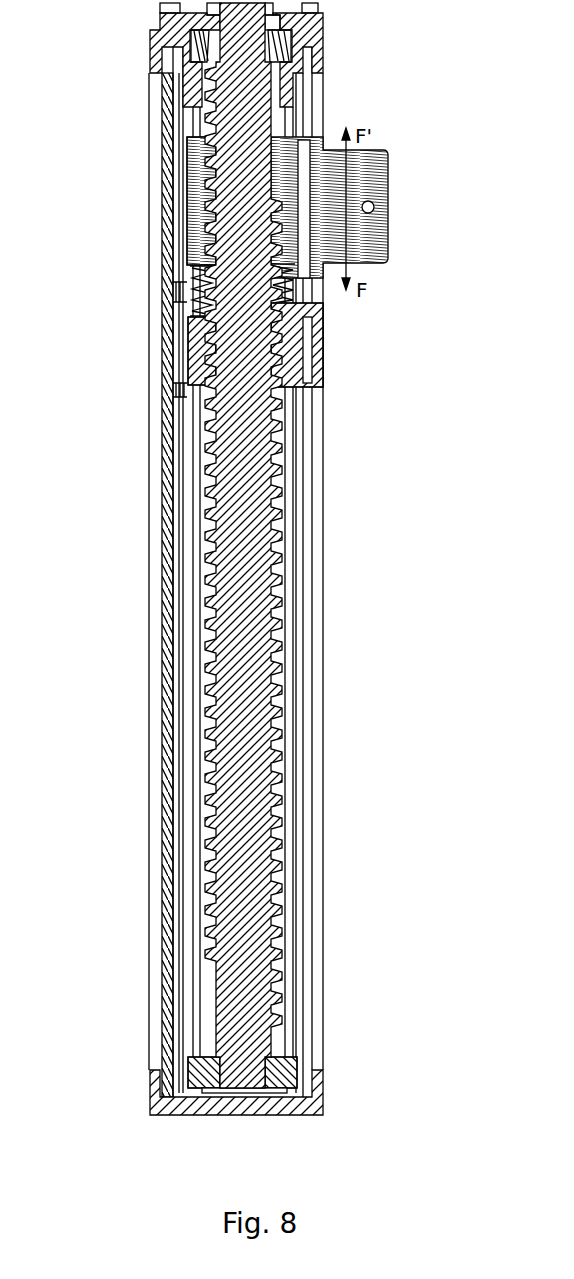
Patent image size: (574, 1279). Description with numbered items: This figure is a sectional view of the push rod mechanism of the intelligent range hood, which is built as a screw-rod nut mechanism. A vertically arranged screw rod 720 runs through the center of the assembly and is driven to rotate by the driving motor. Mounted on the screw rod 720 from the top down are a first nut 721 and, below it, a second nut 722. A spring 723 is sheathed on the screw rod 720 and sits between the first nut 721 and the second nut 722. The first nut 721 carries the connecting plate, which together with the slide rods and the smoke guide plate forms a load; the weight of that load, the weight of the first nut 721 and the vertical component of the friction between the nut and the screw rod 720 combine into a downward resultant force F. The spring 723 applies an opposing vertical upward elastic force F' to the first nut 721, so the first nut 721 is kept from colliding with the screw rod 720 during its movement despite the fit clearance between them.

The screw rod 720 is at (243, 742).
The first nut 721 is at (186, 203).
The second nut 722 is at (200, 338).
The spring 723 is at (190, 289).